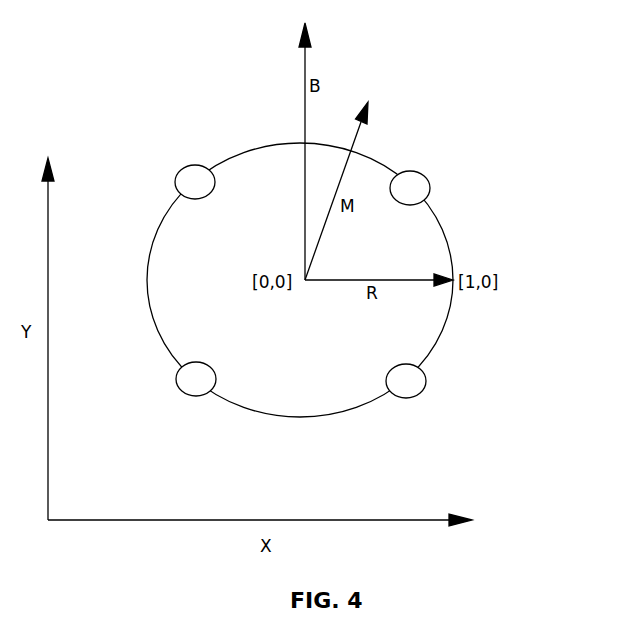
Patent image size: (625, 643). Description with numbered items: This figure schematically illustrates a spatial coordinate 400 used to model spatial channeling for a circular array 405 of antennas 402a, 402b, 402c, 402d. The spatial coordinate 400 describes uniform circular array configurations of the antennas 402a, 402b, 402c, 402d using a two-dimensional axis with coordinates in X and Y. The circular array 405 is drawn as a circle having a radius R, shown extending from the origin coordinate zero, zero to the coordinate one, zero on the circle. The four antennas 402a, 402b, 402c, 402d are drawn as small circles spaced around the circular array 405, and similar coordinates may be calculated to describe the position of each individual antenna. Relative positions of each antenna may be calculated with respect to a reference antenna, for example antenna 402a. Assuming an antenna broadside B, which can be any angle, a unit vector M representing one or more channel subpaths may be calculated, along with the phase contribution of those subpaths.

The spatial coordinate 400 is at (419, 94).
The antenna 402a is at (425, 172).
The antenna 402b is at (188, 166).
The antenna 402c is at (183, 395).
The antenna 402d is at (418, 397).
The circular array 405 is at (448, 232).